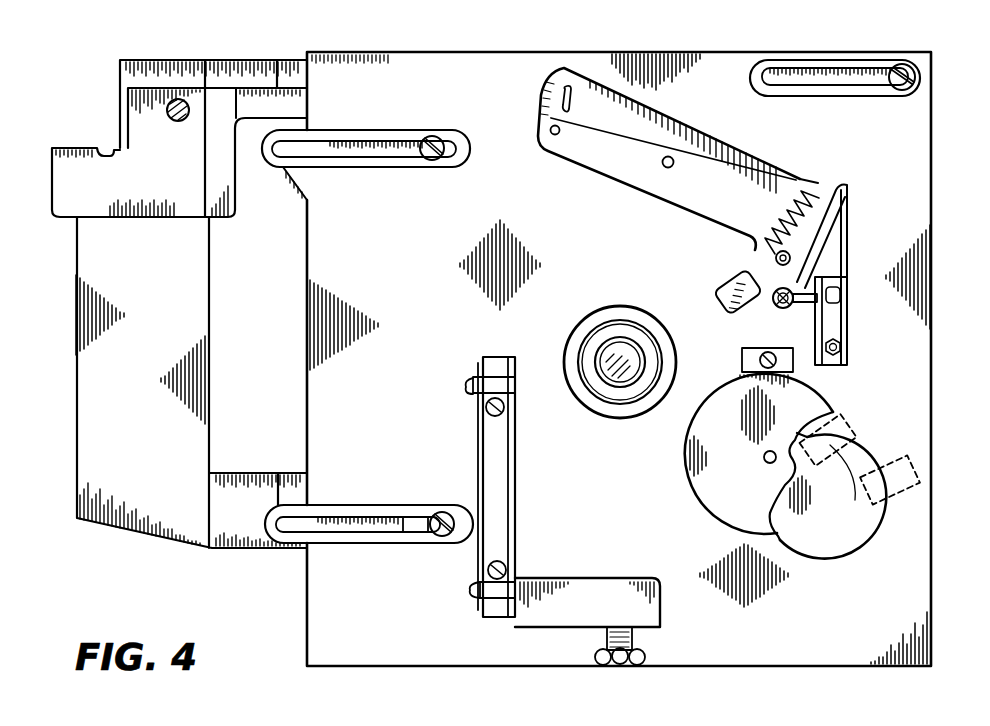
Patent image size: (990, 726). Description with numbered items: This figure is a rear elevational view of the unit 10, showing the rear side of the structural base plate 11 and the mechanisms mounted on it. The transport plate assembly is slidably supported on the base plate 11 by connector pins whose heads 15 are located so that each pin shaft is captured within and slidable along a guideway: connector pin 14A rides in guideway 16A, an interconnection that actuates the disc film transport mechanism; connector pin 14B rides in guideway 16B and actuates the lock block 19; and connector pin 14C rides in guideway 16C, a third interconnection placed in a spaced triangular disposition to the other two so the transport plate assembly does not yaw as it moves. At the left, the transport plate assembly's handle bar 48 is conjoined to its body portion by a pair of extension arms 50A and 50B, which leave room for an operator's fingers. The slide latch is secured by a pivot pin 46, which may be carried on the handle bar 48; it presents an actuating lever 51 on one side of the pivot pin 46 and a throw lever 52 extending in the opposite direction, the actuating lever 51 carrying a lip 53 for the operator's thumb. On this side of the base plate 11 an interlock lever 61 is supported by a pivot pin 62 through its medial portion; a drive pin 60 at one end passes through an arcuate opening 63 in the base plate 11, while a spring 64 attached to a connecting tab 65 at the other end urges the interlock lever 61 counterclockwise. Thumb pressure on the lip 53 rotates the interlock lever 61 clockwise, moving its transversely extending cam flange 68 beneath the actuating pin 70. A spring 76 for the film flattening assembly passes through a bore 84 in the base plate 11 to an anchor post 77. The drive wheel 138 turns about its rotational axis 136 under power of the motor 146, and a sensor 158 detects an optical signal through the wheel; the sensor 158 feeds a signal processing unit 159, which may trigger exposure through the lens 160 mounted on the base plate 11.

The apparatus 10 is at (758, 43).
The structural base plate 11 is at (931, 155).
The connector pin 14A is at (432, 134).
The connector pin 14B is at (440, 510).
The connector pin 14C is at (900, 90).
The head 15 is at (435, 160).
The guideway 16A is at (390, 143).
The guideway 16B is at (333, 531).
The guideway 16C is at (806, 82).
The lock block 19 is at (412, 531).
The pivot pin 46 is at (182, 121).
The handle bar 48 is at (195, 410).
The extension arm 50A is at (290, 62).
The extension arm 50B is at (244, 549).
The actuating lever 51 is at (137, 111).
The throw lever 52 is at (297, 100).
The lip 53 is at (60, 147).
The drive pin 60 is at (552, 133).
The interlock lever 61 is at (638, 156).
The pivot pin 62 is at (670, 157).
The opening 63 is at (573, 102).
The spring 64 is at (790, 186).
The connecting tab 65 is at (740, 247).
The cam flange 68 is at (815, 233).
The actuating pin 70 is at (777, 262).
The spring 76 is at (790, 308).
The anchor post 77 is at (828, 301).
The bore 84 is at (772, 304).
The rotational axis 136 is at (766, 463).
The drive wheel 138 is at (817, 485).
The motor 146 is at (693, 461).
The sensor 158 is at (850, 431).
The signal processing unit 159 is at (515, 475).
The lens 160 is at (606, 353).